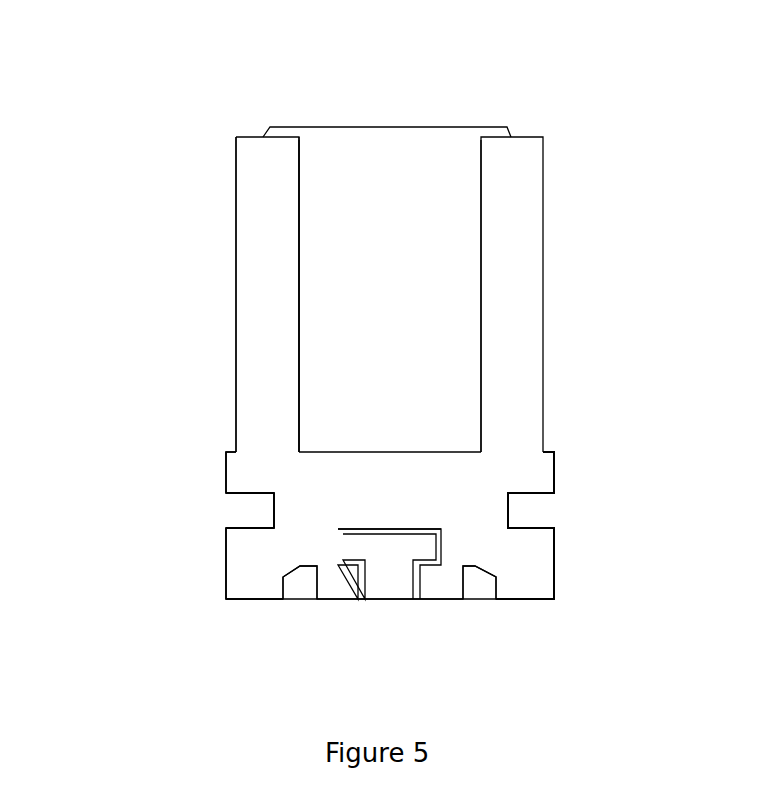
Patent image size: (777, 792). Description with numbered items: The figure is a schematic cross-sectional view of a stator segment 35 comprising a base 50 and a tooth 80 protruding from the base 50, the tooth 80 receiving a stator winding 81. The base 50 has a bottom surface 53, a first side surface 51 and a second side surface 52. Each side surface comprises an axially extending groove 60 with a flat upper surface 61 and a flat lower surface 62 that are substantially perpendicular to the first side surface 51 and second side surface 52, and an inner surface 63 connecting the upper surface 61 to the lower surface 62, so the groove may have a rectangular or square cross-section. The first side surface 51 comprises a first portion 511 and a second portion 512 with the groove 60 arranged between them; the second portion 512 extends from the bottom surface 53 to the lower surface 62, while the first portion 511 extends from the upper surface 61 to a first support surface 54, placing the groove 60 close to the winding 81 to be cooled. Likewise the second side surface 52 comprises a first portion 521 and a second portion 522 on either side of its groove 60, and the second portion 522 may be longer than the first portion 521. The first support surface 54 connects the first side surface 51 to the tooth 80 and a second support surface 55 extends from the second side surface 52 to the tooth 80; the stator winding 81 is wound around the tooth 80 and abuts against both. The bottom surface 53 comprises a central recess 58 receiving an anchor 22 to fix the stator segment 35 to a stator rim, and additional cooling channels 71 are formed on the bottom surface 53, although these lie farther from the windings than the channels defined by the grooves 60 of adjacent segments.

The stator segment 35 is at (372, 374).
The tooth 80 is at (335, 272).
The stator winding 81 is at (257, 198).
The second support surface 55 is at (275, 452).
The first support surface 54 is at (507, 452).
The central recess 58 is at (398, 529).
The anchor 22 is at (479, 483).
The base 50 is at (372, 540).
The first side surface 51 is at (636, 592).
The second side surface 52 is at (126, 557).
The bottom surface 53 is at (513, 600).
The first portion 511 is at (555, 463).
The second portion 512 is at (556, 587).
The first portion 521 is at (226, 467).
The second portion 522 is at (226, 586).
The axially extending groove 60 is at (146, 510).
The upper surface 61 is at (250, 492).
The lower surface 62 is at (237, 572).
The inner surface 63 is at (274, 505).
The additional cooling channels 71 is at (302, 610).